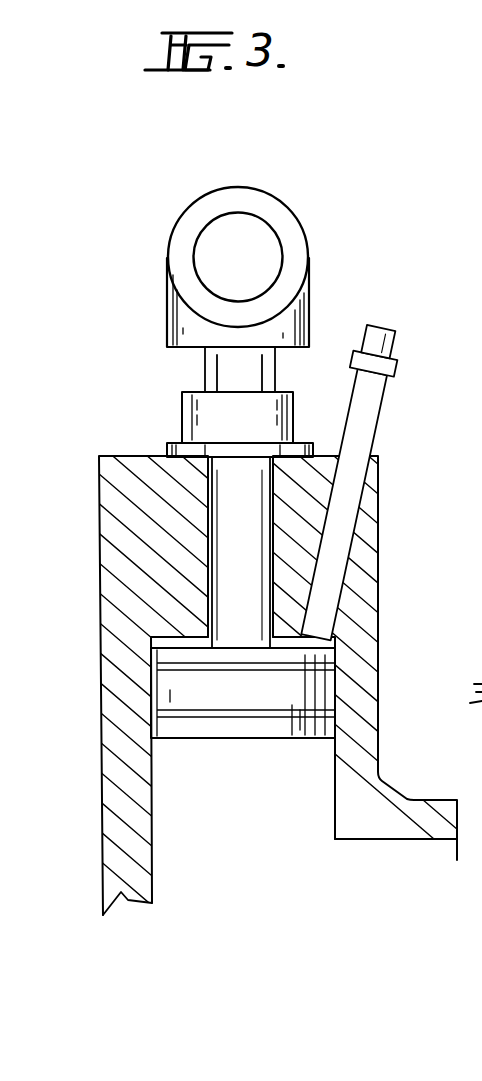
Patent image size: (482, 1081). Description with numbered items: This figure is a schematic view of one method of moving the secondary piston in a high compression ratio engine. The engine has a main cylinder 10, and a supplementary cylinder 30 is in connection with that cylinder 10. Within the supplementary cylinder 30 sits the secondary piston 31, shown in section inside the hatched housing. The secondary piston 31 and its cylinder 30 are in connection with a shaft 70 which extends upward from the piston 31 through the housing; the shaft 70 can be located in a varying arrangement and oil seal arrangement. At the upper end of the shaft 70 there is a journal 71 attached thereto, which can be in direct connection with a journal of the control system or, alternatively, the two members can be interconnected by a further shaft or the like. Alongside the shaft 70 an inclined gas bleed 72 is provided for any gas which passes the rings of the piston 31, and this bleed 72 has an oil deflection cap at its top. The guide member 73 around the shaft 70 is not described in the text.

The housing / cylinder block 10 is at (390, 913).
The cylinder chamber 30 is at (258, 819).
The piston 31 is at (178, 698).
The piston rod 70 is at (253, 518).
The eye end of piston rod 71 is at (223, 243).
The bolt 72 is at (360, 417).
The guide bushing 73 is at (195, 413).